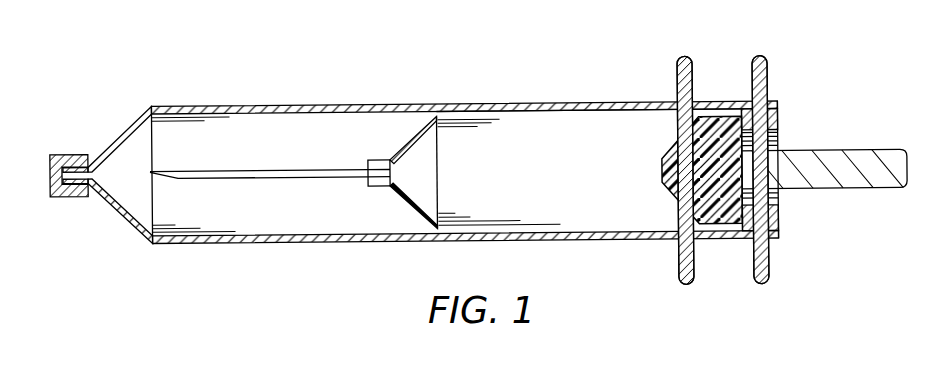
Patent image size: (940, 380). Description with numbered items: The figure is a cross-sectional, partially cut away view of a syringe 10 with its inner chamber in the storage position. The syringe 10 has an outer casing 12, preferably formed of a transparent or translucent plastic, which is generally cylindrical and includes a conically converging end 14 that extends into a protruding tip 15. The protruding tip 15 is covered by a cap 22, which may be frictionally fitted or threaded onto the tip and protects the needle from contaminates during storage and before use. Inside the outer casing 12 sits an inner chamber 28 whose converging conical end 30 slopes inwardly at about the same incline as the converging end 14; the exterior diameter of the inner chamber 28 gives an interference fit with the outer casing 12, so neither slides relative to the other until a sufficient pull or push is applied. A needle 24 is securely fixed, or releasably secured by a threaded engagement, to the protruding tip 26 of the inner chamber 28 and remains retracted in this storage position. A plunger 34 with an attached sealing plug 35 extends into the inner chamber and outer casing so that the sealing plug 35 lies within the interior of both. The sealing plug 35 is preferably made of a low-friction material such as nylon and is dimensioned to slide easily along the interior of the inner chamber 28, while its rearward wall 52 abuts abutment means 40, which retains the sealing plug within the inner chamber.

The syringe 10 is at (467, 160).
The outer casing 12 is at (348, 241).
The conically converging end 14 is at (122, 126).
The protruding tip 15 is at (72, 149).
The cap 22 is at (50, 178).
The needle 24 is at (178, 168).
The protruding tip of the inner chamber 26 is at (375, 159).
The inner chamber 28 is at (565, 113).
The converging conical end 30 is at (423, 133).
The plunger 34 is at (845, 165).
The sealing plug 35 is at (660, 166).
The abutment means 40 is at (748, 200).
The rearward wall 52 is at (742, 196).